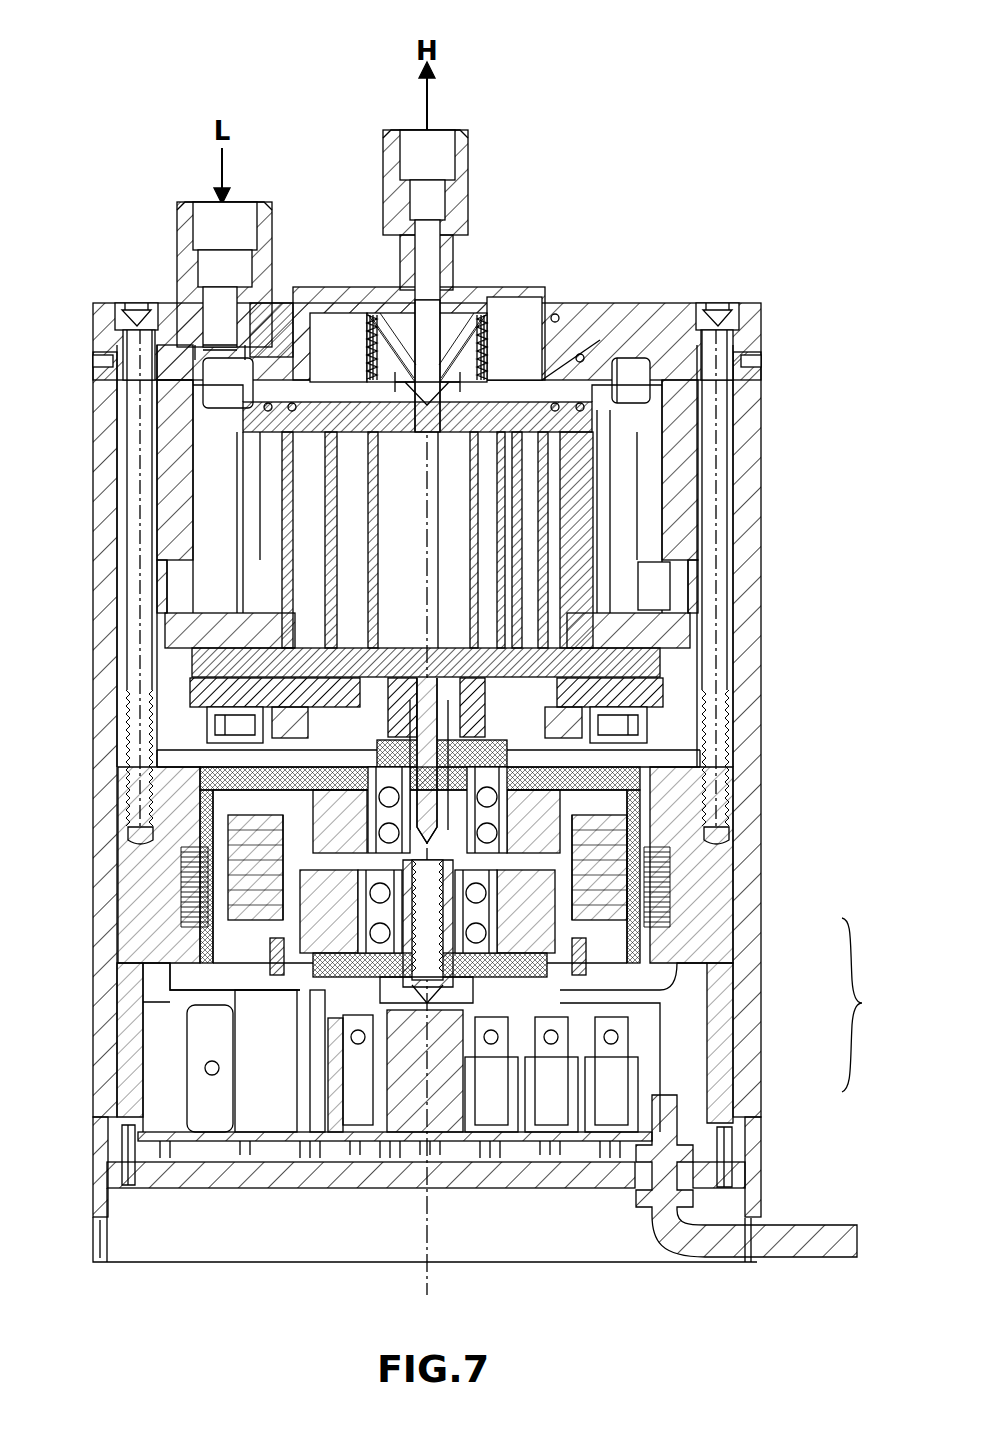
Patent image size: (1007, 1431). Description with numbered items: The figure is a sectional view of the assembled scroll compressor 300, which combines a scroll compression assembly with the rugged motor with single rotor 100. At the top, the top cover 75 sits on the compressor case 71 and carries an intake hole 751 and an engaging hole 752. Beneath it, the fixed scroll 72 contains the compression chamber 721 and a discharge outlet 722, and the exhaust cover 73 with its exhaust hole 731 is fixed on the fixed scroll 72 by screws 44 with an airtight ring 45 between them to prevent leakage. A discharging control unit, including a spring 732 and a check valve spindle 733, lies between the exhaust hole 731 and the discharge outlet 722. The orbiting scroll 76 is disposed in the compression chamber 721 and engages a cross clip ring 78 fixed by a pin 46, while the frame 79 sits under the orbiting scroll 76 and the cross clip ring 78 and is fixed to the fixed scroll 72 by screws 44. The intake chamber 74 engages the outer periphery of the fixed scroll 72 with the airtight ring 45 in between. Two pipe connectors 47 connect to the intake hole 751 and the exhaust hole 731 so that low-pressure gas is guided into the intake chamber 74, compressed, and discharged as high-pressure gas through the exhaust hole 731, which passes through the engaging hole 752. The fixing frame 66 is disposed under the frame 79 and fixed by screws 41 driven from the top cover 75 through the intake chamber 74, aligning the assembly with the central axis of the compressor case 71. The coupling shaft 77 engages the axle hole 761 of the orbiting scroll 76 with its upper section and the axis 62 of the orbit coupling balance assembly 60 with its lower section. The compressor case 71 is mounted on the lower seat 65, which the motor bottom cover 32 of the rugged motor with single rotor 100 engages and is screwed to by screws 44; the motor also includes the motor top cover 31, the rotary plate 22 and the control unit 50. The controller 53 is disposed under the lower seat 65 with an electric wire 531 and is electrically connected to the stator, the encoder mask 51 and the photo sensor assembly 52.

The scroll compressor 300 is at (28, 48).
The rotary plate 22 is at (620, 880).
The motor top cover 31 is at (208, 790).
The motor bottom cover 32 is at (262, 945).
The screws 41 is at (718, 500).
The screws 44 is at (230, 905).
The airtight ring 45 is at (240, 410).
The pin 46 is at (240, 668).
The pipe connectors 47 is at (465, 160).
The control unit 50 is at (871, 1005).
The encoder mask 51 is at (620, 940).
The photo sensor assembly 52 is at (623, 957).
The controller 53 is at (617, 1072).
The orbit coupling balance assembly 60 is at (510, 755).
The axis 62 is at (295, 850).
The lower seat 65 is at (717, 983).
The fixing frame 66 is at (645, 795).
The compressor case 71 is at (751, 375).
The fixed scroll 72 is at (590, 570).
The exhaust cover 73 is at (540, 292).
The intake chamber 74 is at (672, 462).
The top cover 75 is at (660, 303).
The orbiting scroll 76 is at (600, 660).
The coupling shaft 77 is at (350, 750).
The cross clip ring 78 is at (220, 700).
The frame 79 is at (240, 740).
The rugged motor with single rotor 100 is at (625, 840).
The electric wire 531 is at (787, 1242).
The compression chamber 721 is at (590, 530).
The discharge outlet 722 is at (690, 420).
The exhaust hole 731 is at (460, 266).
The spring 732 is at (390, 320).
The check valve spindle 733 is at (440, 330).
The intake hole 751 is at (185, 325).
The engaging hole 752 is at (560, 318).
The axle hole 761 is at (575, 700).